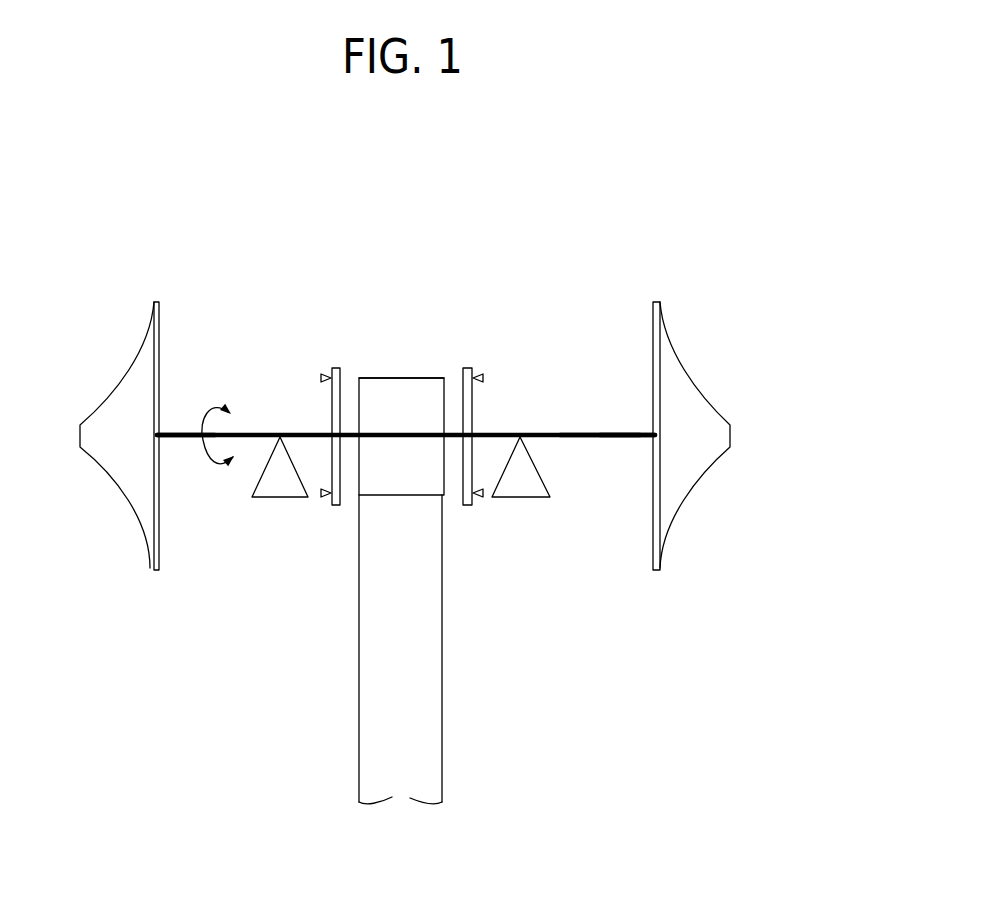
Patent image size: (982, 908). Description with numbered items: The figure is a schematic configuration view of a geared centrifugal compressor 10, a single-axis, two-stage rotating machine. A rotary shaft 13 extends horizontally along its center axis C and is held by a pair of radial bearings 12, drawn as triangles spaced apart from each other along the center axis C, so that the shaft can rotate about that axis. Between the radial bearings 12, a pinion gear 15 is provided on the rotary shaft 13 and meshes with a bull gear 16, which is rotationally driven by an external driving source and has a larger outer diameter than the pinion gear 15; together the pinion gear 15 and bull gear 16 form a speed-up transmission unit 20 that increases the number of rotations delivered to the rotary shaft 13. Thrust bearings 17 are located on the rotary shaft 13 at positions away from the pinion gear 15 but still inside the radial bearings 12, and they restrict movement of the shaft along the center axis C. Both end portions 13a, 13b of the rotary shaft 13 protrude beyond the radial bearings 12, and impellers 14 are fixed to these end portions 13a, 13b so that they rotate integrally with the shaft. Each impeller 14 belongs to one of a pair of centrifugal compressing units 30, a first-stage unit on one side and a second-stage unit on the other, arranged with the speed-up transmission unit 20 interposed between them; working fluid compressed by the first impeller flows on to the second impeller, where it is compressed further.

The geared centrifugal compressor 10 is at (434, 493).
The radial bearings 12 is at (280, 497).
The rotary shaft 13 is at (593, 440).
The end portion of rotary shaft 13a is at (640, 440).
The end portion of rotary shaft 13b is at (160, 440).
The impellers 14 is at (150, 573).
The pinion gear 15 is at (426, 378).
The bull gear 16 is at (440, 727).
The thrust bearings 17 is at (402, 384).
The speed-up transmission unit 20 is at (400, 369).
The centrifugal compressing units 30 is at (446, 381).
The center axis C is at (603, 433).